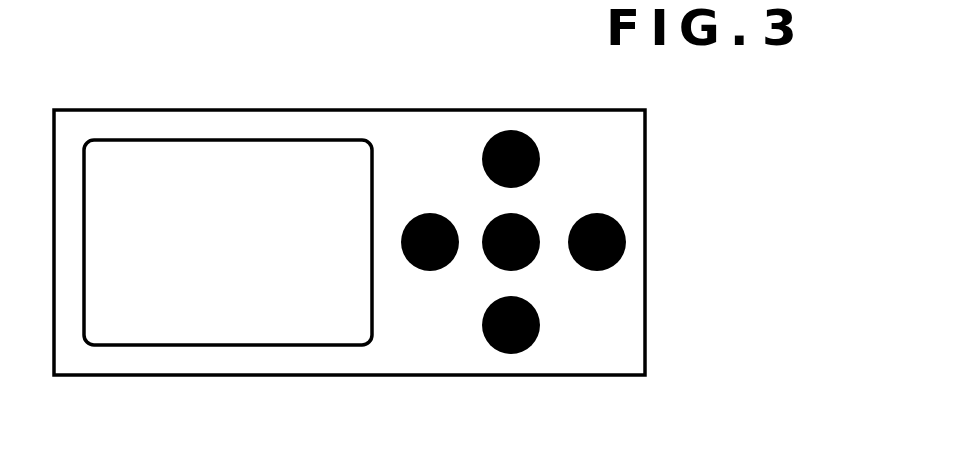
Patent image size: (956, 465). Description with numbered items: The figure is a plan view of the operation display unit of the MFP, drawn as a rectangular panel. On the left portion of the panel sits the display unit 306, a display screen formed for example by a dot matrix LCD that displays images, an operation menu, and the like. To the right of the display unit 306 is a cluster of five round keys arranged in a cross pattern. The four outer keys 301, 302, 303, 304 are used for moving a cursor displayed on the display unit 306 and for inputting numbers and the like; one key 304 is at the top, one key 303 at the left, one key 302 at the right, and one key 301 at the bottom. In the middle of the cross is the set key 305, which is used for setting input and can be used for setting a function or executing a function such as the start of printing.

The key 301 is at (513, 354).
The key 302 is at (625, 243).
The key 303 is at (428, 214).
The key 304 is at (514, 131).
The set key 305 is at (532, 224).
The display unit 306 is at (213, 176).